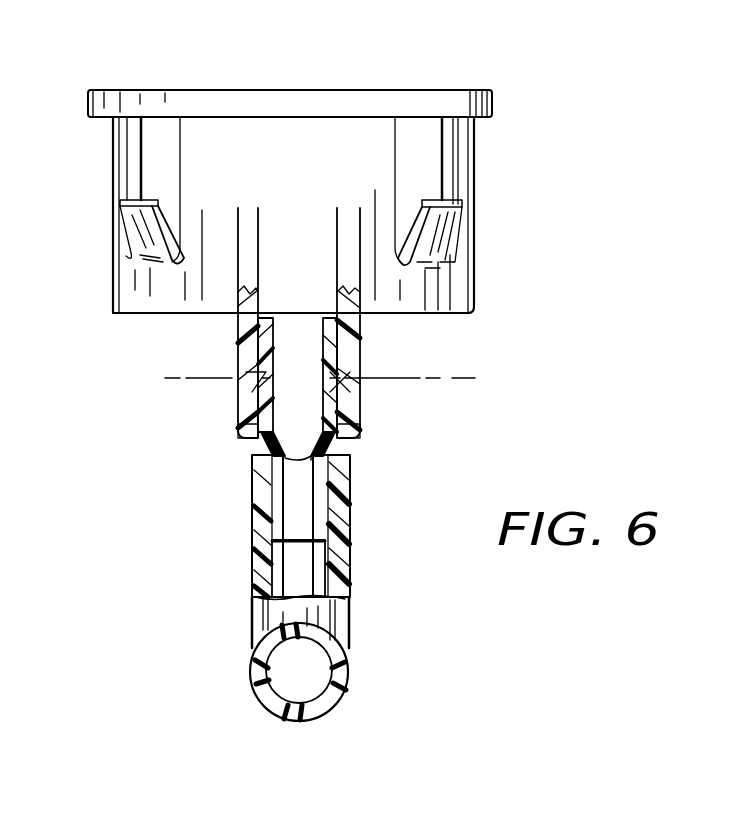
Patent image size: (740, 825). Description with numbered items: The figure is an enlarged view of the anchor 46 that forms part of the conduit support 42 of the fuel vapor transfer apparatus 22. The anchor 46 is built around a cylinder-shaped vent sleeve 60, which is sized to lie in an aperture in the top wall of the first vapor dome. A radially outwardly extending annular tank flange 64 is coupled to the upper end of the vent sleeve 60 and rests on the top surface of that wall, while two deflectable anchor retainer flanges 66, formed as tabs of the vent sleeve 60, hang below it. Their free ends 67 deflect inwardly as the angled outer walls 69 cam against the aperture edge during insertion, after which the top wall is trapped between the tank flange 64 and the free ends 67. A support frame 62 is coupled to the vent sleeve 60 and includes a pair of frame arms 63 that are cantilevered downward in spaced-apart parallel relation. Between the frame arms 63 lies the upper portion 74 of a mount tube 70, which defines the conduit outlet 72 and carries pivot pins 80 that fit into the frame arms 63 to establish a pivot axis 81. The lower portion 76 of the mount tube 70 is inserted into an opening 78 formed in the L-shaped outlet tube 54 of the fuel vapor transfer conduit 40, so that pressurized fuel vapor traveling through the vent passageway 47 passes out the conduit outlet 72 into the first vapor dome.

The conduit support 42 is at (327, 183).
The annular tank flange 64 is at (492, 108).
The vent sleeve 60 is at (106, 314).
The deflectable anchor retainer flanges 66 is at (293, 207).
The free ends 67 is at (155, 205).
The angled outer walls 69 is at (137, 228).
The anchor 46 is at (503, 291).
The conduit outlet 72 is at (280, 338).
The upper portion 74 is at (352, 338).
The pivot pins 80 is at (262, 374).
The pivot axis 81 is at (180, 382).
The frame arms 63 is at (240, 412).
The support frame 62 is at (375, 430).
The opening 78 is at (270, 488).
The mount tube 70 is at (310, 470).
The vent passageway 47 is at (306, 520).
The lower portion 76 is at (290, 546).
The fuel vapor transfer conduit 40 is at (358, 630).
The outlet tube 54 is at (250, 612).
The fuel vapor transfer apparatus 22 is at (375, 684).